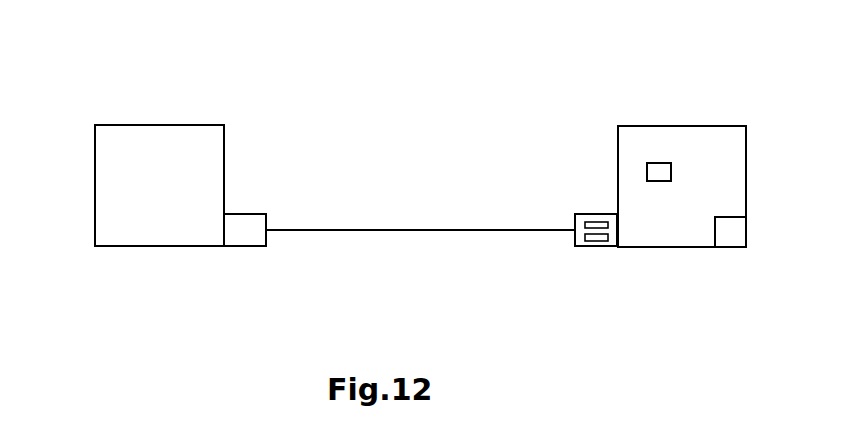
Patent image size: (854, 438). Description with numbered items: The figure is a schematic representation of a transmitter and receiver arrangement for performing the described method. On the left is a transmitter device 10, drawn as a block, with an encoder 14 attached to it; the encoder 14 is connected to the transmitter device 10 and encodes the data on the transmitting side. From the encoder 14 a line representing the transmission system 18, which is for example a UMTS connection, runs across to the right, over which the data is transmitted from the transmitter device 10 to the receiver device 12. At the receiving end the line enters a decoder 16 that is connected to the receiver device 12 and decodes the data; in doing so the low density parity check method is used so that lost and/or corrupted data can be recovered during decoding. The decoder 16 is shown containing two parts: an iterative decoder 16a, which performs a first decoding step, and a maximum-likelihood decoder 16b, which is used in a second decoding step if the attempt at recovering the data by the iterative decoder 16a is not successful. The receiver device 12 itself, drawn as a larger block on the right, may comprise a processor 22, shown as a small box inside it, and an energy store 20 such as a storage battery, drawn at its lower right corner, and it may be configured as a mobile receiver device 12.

The transmitter device 10 is at (146, 155).
The receiver device 12 is at (679, 135).
The encoder 14 is at (246, 236).
The decoder 16 is at (593, 247).
The iterative decoder 16a is at (592, 220).
The maximum-likelihood decoder 16b is at (587, 237).
The transmission system 18 is at (413, 230).
The energy store 20 is at (730, 229).
The processor 22 is at (657, 165).